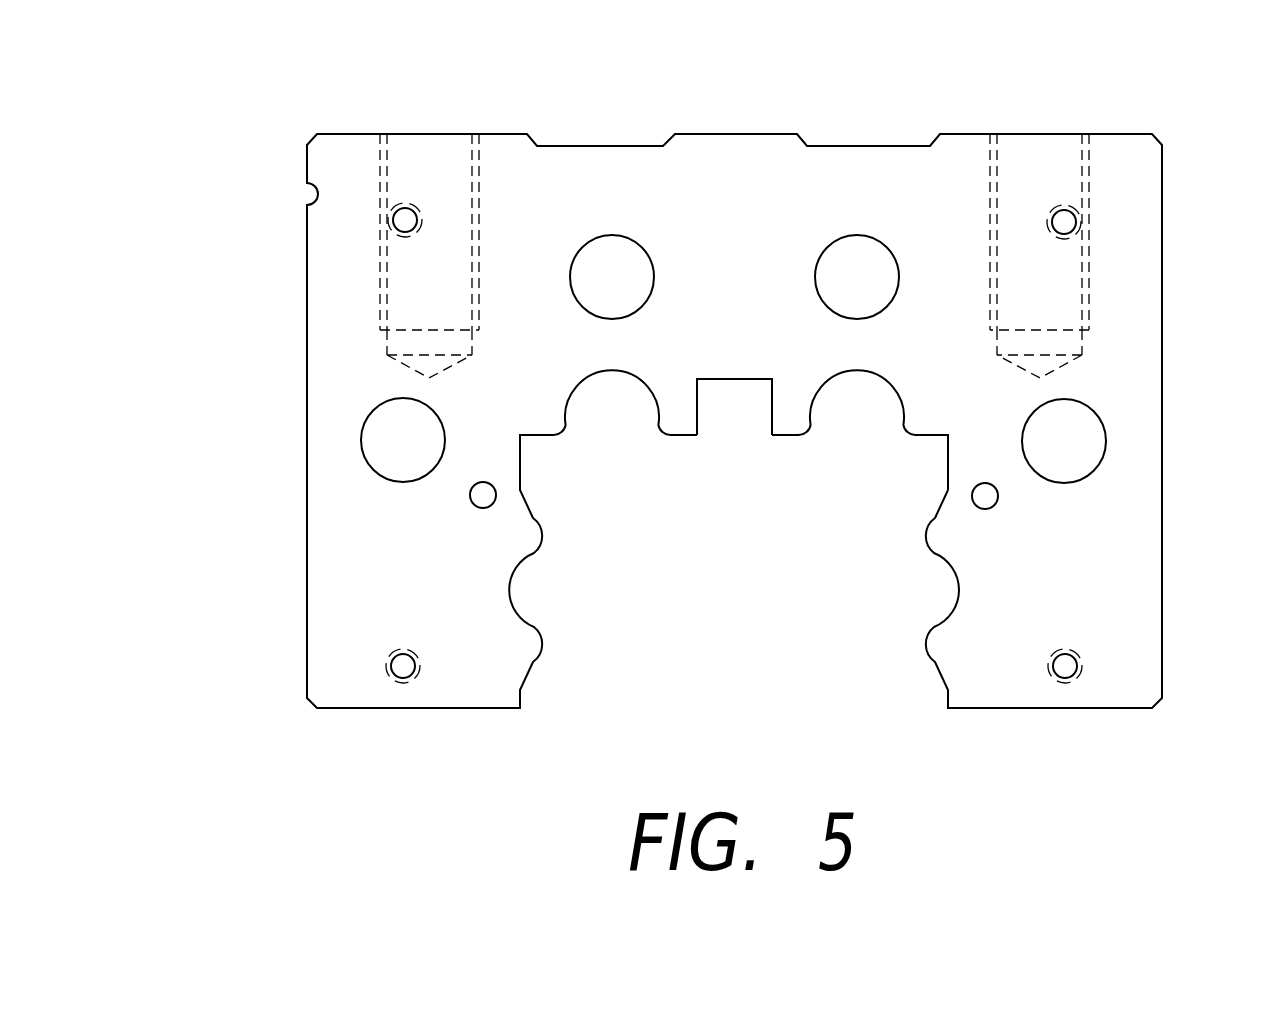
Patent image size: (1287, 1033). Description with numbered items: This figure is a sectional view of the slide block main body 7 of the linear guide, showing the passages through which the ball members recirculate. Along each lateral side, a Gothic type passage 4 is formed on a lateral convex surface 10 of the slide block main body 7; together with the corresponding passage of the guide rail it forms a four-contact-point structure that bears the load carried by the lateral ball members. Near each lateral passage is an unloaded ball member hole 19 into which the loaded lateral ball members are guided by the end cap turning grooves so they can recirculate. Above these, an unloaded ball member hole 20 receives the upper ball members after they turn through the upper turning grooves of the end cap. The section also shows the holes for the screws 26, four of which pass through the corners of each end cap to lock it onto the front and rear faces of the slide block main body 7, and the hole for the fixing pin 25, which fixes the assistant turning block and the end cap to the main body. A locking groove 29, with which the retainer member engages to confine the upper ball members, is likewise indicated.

The slide block main body 7 is at (1135, 187).
The locking groove 29 is at (732, 380).
The lateral convex surface 10 is at (935, 512).
The Gothic type passage 4 is at (950, 565).
The screws 26 is at (395, 212).
The unloaded ball member hole 20 is at (857, 235).
The unloaded ball member holes 19 is at (362, 432).
The fixing pin 25 is at (470, 500).